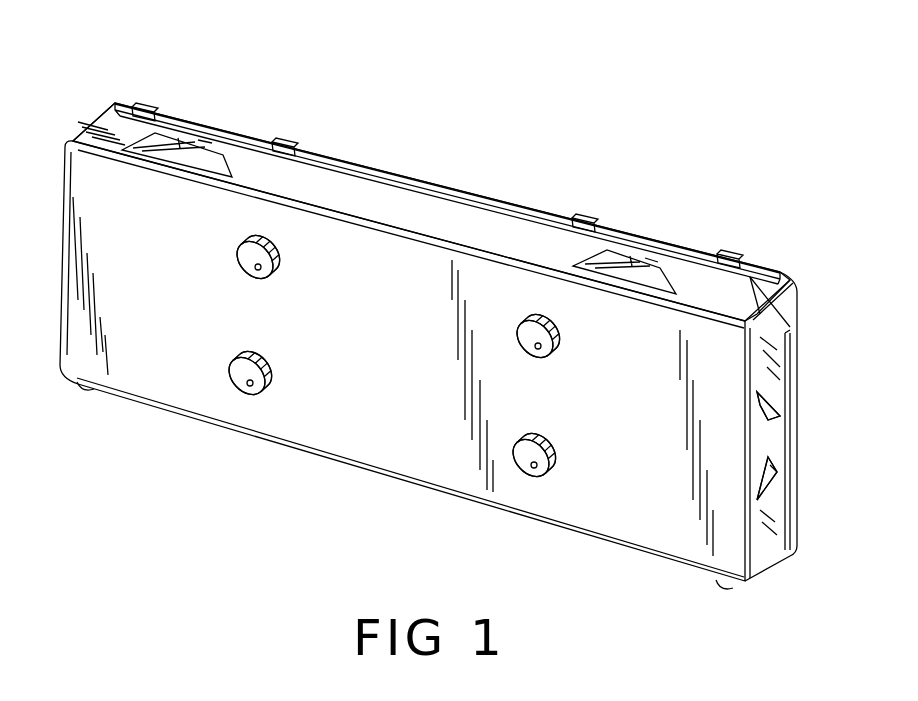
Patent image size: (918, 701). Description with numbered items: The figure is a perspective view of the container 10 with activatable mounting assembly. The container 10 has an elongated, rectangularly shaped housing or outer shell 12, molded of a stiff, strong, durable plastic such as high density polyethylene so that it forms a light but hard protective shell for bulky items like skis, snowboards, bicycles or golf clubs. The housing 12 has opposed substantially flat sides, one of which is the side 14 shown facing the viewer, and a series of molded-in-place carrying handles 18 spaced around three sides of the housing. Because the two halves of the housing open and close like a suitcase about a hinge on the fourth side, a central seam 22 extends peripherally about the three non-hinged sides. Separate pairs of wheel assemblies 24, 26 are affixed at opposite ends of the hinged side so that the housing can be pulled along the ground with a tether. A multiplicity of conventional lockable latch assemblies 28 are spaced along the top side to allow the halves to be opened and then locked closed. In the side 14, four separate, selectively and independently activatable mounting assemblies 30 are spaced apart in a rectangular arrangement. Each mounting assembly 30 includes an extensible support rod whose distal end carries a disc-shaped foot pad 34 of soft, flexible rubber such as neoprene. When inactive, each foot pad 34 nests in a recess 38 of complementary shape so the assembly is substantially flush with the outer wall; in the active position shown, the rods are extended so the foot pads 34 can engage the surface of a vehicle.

The container with activatable mounting assembly 10 is at (258, 493).
The housing or outer shell 12 is at (417, 457).
The side 14 is at (392, 337).
The carrying handles 18 is at (197, 123).
The central seam 22 is at (487, 201).
The wheel assembly 24 is at (720, 588).
The wheel assembly 26 is at (83, 395).
The lockable latch assemblies 28 is at (143, 102).
The mounting assemblies 30 is at (231, 406).
The foot pad 34 is at (275, 270).
The recess 38 is at (250, 240).